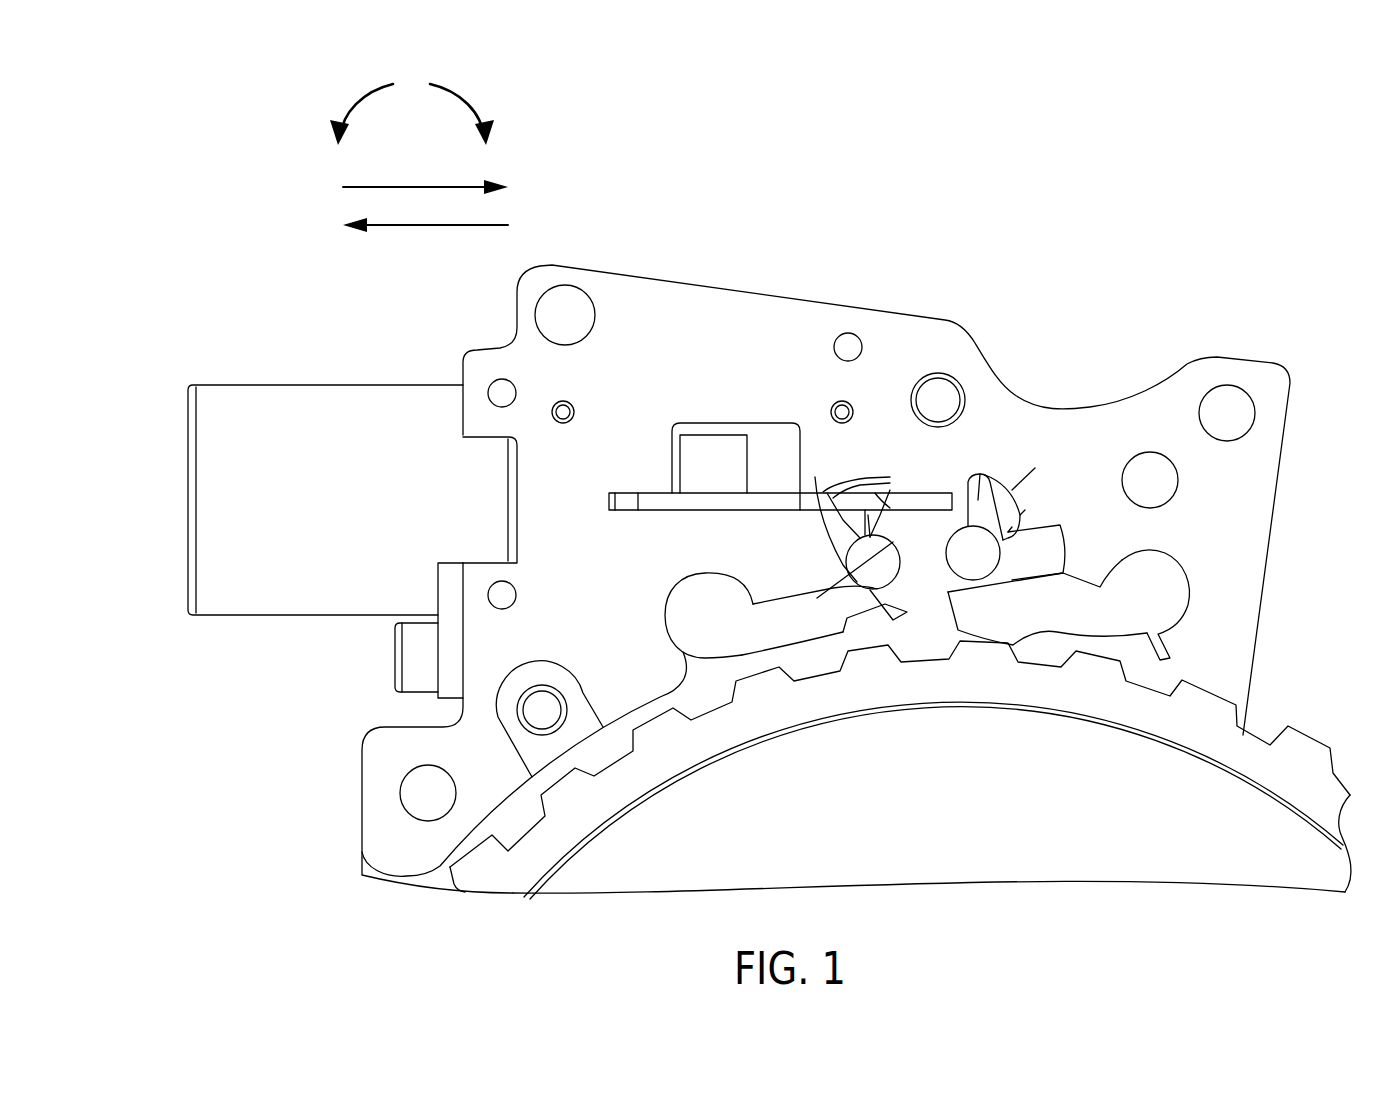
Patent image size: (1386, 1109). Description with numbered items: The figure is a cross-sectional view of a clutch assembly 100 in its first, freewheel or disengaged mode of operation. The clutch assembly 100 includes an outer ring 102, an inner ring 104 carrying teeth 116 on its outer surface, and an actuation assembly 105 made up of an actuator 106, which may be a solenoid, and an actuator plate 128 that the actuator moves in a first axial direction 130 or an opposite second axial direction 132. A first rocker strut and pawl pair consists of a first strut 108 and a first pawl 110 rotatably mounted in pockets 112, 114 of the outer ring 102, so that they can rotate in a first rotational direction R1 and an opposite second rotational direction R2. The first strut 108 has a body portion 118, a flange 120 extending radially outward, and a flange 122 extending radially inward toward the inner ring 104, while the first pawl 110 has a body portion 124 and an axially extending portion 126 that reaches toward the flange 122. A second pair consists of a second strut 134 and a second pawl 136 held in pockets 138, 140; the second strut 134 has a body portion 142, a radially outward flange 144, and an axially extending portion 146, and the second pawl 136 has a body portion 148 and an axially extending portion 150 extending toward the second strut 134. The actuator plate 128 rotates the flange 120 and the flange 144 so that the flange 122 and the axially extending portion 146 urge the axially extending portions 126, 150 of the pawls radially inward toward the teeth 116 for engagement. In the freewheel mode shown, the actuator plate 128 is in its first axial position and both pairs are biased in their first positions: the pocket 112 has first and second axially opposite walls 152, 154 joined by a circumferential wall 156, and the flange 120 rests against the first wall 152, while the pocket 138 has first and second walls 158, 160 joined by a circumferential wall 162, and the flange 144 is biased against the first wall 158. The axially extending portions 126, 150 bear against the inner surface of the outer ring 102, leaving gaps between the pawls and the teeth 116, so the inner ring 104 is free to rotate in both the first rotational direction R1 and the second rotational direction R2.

The clutch assembly 100 is at (206, 154).
The outer ring 102 is at (657, 290).
The inner ring 104 is at (1270, 860).
The actuation assembly 105 is at (366, 372).
The actuator 106 is at (280, 385).
The first strut 108 is at (890, 490).
The first pawl 110 is at (672, 652).
The pocket 112 is at (843, 485).
The pocket 114 is at (665, 610).
The teeth 116 is at (1295, 732).
The body portion 118 is at (883, 605).
The flange 120 is at (827, 510).
The flange 122 is at (897, 587).
The body portion 124 is at (695, 597).
The axially extending portion 126 is at (782, 630).
The actuator plate 128 is at (780, 490).
The first axial direction 130 is at (463, 185).
The second axial direction 132 is at (433, 225).
The second strut 134 is at (1012, 527).
The second pawl 136 is at (1187, 607).
The pocket 138 is at (988, 498).
The pocket 140 is at (1175, 570).
The body portion 142 is at (973, 560).
The flange 144 is at (990, 497).
The axially extending portion 146 is at (1058, 540).
The body portion 148 is at (1175, 590).
The axially extending portion 150 is at (1063, 625).
The first wall 152 is at (823, 533).
The second wall 154 is at (890, 508).
The circumferential wall 156 is at (838, 483).
The first wall 158 is at (973, 513).
The second wall 160 is at (1025, 510).
The circumferential wall 162 is at (980, 473).
The first rotational direction R1 is at (475, 100).
The second rotational direction R2 is at (353, 103).